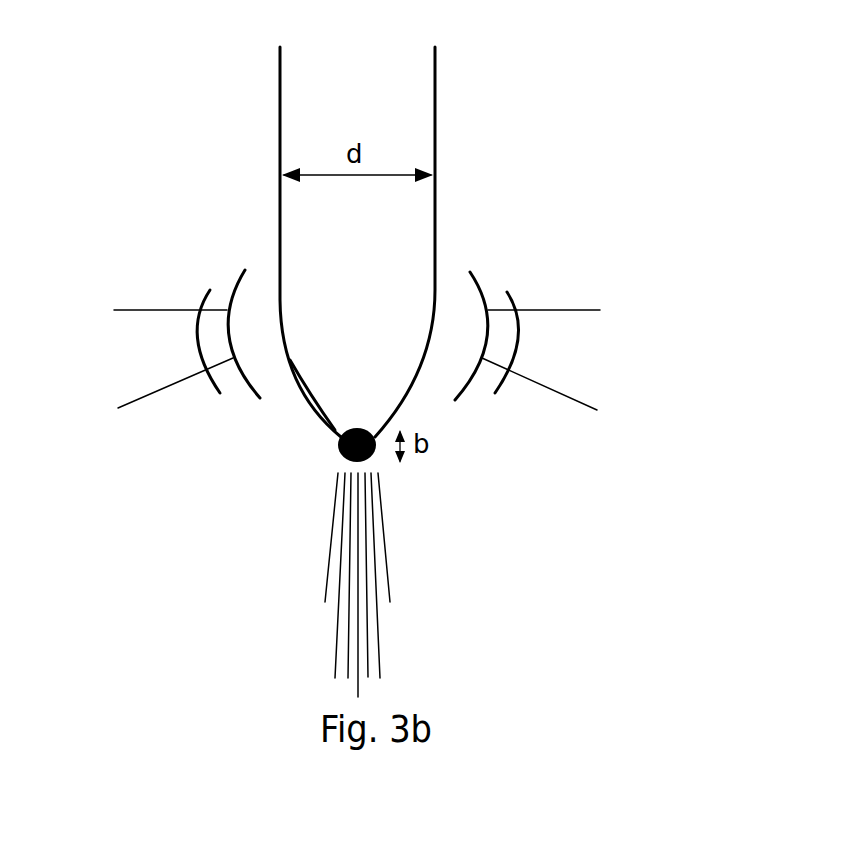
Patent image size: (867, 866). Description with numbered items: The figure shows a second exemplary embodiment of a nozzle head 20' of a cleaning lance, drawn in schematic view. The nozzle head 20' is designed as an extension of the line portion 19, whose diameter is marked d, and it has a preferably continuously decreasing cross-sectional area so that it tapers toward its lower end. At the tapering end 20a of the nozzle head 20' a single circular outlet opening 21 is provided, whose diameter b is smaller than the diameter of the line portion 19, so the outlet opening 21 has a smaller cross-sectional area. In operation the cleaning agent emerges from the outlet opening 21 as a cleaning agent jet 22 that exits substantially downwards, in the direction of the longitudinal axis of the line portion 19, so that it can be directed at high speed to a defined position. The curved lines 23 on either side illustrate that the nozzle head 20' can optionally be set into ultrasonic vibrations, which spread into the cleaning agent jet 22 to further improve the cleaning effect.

The line portion 19 is at (422, 103).
The nozzle head 20' is at (242, 421).
The tapering end 20a is at (343, 460).
The outlet opening 21 is at (370, 460).
The cleaning agent jet 22 is at (367, 615).
The lines 23 is at (518, 330).